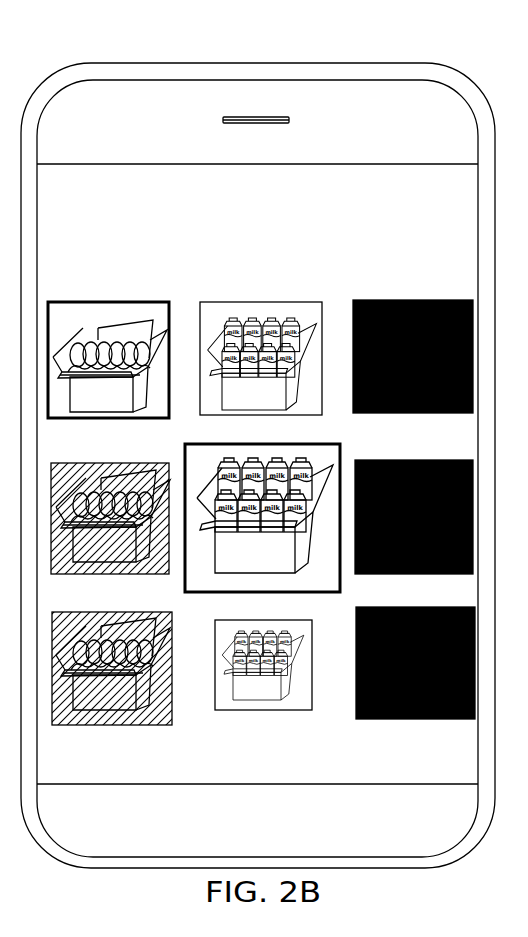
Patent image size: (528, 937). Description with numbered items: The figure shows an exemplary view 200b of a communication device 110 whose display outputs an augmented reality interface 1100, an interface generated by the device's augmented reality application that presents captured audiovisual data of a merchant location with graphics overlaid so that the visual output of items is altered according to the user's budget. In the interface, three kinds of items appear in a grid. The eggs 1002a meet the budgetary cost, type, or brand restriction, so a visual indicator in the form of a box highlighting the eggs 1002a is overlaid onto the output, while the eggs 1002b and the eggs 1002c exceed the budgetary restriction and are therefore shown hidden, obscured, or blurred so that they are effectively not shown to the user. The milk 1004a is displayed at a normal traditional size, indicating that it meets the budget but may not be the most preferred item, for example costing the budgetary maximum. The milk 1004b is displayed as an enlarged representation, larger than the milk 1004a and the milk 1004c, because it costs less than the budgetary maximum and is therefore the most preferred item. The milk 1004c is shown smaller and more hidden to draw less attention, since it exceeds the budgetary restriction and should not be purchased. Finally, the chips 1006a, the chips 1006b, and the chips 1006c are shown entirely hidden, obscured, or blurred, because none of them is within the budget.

The communication device screen view 200b is at (318, 63).
The communication device 110 is at (398, 195).
The augmented reality interface 1100 is at (432, 232).
The eggs 1002a is at (106, 300).
The eggs 1002b is at (62, 462).
The eggs 1002c is at (62, 611).
The milk 1004a is at (262, 300).
The milk 1004b is at (214, 446).
The milk 1004c is at (267, 712).
The chips 1006a is at (412, 298).
The chips 1006b is at (360, 459).
The chips 1006c is at (410, 721).